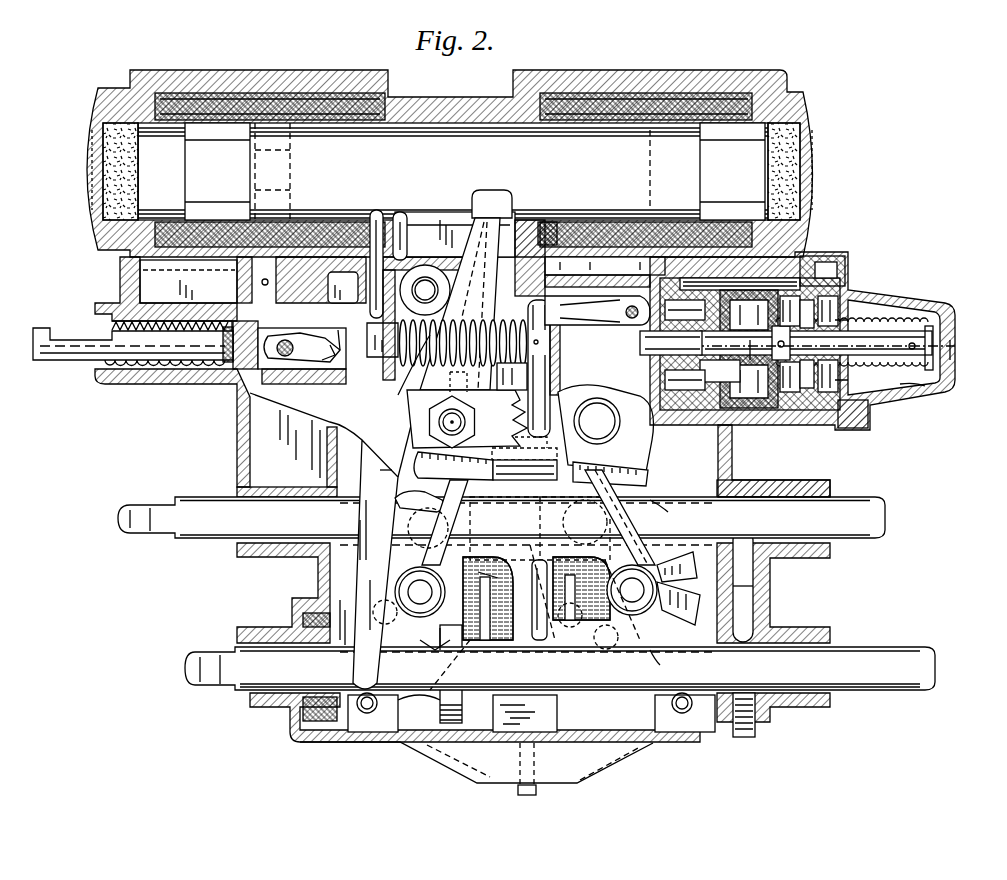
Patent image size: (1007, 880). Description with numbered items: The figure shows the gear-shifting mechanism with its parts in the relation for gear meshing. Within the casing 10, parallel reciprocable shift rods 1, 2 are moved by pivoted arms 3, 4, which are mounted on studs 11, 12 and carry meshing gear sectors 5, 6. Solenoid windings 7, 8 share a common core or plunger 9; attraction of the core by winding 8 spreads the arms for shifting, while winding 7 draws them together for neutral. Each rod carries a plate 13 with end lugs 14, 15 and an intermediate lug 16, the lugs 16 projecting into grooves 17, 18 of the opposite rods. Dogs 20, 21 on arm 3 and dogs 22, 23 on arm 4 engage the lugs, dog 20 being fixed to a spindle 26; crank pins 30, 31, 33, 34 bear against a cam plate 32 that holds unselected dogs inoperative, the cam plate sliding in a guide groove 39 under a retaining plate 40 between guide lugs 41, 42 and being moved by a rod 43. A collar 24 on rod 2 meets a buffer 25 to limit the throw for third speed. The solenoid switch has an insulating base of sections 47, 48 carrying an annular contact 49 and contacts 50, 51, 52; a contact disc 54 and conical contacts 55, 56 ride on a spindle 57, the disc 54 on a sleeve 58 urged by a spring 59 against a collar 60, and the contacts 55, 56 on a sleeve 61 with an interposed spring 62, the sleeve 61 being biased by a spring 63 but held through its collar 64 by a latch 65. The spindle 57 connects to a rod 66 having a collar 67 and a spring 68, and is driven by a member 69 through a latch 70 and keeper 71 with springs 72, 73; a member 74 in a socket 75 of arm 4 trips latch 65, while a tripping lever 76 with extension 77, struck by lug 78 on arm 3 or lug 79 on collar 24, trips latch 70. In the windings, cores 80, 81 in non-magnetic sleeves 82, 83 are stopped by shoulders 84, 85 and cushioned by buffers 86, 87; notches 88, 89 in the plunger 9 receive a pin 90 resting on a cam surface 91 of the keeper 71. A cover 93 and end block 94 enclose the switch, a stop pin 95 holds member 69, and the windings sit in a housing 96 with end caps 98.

The shift rod 1 is at (878, 538).
The shift rod 2 is at (902, 690).
The pivoted arm 3 is at (405, 465).
The pivoted arm 4 is at (660, 470).
The gear sector 5 is at (522, 408).
The gear sector 6 is at (570, 446).
The solenoid winding 7 is at (270, 92).
The solenoid winding 8 is at (640, 93).
The common core 9 is at (454, 171).
The casing 10 is at (318, 570).
The stud 11 is at (440, 423).
The stud 12 is at (617, 436).
The plate 13 is at (665, 506).
The end lug 14 is at (472, 620).
The end lug 15 is at (745, 640).
The intermediate lug 16 is at (540, 650).
The longitudinal groove 17 is at (665, 640).
The longitudinal groove 18 is at (540, 510).
The dog 20 is at (352, 522).
The dog 21 is at (350, 650).
The dog 22 is at (690, 562).
The dog 23 is at (693, 592).
The collar 24 is at (462, 723).
The buffer 25 is at (322, 737).
The spindle 26 is at (526, 591).
The crank pin 30 is at (432, 522).
The crank pin 31 is at (436, 640).
The cam plate 32 is at (500, 710).
The crank pin 33 is at (585, 522).
The crank pin 34 is at (600, 650).
The guide groove 39 is at (578, 482).
The retaining plate 40 is at (470, 475).
The guide lug 41 is at (482, 585).
The guide lug 42 is at (554, 566).
The rod 43 is at (516, 798).
The insulating base section 47 is at (806, 410).
The insulating base section 48 is at (688, 424).
The annular contact 49 is at (840, 415).
The contact 50 is at (805, 272).
The contact 51 is at (802, 422).
The contact 52 is at (739, 349).
The contact disc 54 is at (858, 400).
The conical contact 55 is at (775, 408).
The conical contact 56 is at (718, 418).
The spindle 57 is at (915, 322).
The sleeve 58 is at (872, 302).
The spring 59 is at (928, 386).
The collar 60 is at (832, 262).
The sleeve 61 is at (671, 343).
The spring 62 is at (760, 410).
The spring 63 is at (850, 285).
The collar 64 is at (552, 398).
The latch 65 is at (582, 318).
The rod 66 is at (412, 380).
The collar 67 is at (528, 365).
The spring 68 is at (410, 398).
The member 69 is at (140, 362).
The latch 70 is at (302, 345).
The keeper 71 is at (382, 339).
The spring 72 is at (300, 374).
The spring 73 is at (170, 368).
The member 74 is at (556, 340).
The socket 75 is at (608, 426).
The tripping lever 76 is at (266, 400).
The extension 77 is at (380, 478).
The lug 78 is at (396, 505).
The lug 79 is at (478, 666).
The magnetic core 80 is at (217, 171).
The magnetic core 81 is at (732, 171).
The non-magnetic sleeve 82 is at (335, 92).
The non-magnetic sleeve 83 is at (585, 93).
The annular shoulder 84 is at (252, 92).
The annular shoulder 85 is at (648, 120).
The buffer 86 is at (103, 200).
The buffer 87 is at (800, 178).
The notch 88 is at (376, 210).
The notch 89 is at (402, 228).
The pin 90 is at (449, 241).
The cam surface 91 is at (343, 287).
The removable cover 93 is at (952, 355).
The end block 94 is at (642, 276).
The stop pin 95 is at (258, 290).
The housing 96 is at (778, 72).
The end cap 98 is at (90, 165).